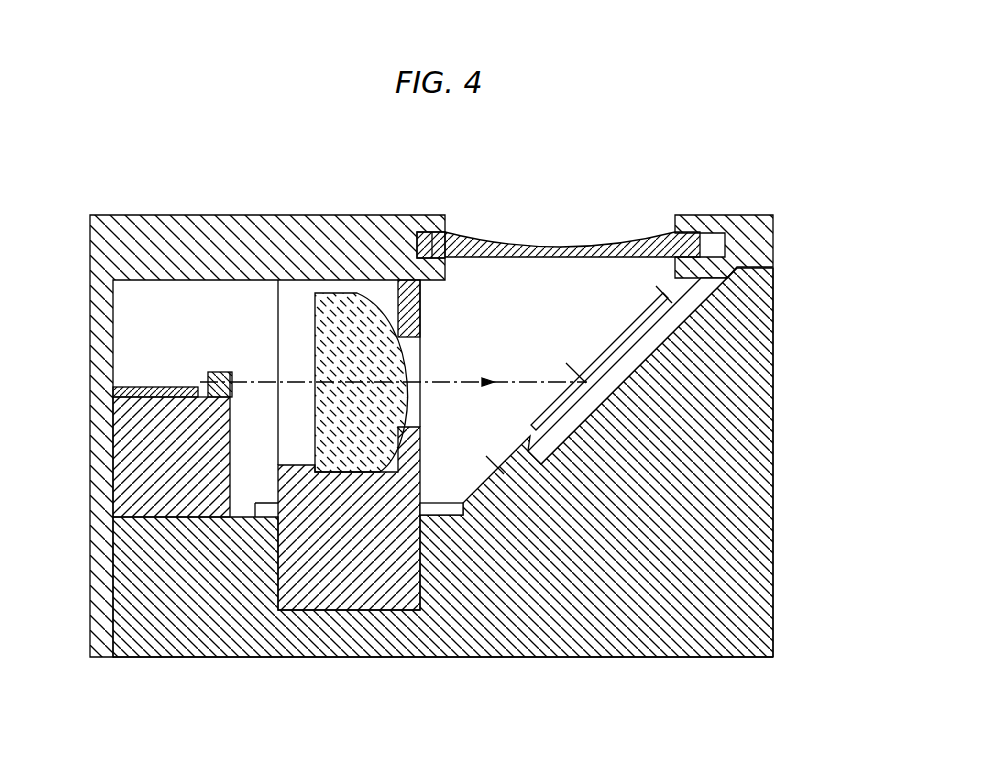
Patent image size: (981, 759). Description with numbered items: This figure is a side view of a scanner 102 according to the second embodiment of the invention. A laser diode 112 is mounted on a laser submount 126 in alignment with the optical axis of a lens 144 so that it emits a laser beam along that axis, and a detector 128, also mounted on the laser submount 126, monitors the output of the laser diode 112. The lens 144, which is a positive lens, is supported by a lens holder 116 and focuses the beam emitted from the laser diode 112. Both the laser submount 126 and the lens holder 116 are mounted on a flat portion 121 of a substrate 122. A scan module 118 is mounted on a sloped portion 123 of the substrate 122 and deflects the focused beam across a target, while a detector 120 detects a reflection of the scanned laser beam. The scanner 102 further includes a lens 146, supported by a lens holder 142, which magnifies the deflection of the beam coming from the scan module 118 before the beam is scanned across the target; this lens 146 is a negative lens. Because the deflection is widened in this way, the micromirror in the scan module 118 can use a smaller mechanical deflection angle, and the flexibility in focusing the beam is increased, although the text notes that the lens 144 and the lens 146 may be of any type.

The scanner 102 is at (317, 152).
The laser diode 112 is at (212, 372).
The lens holder 116 is at (422, 318).
The scan module 118 is at (609, 343).
The detector 120 is at (440, 503).
The flat portion 121 is at (122, 564).
The substrate 122 is at (540, 657).
The sloped portion 123 is at (758, 353).
The laser submount 126 is at (117, 447).
The detector 128 is at (150, 387).
The lens holder 142 is at (193, 228).
The lens 144 is at (388, 366).
The lens 146 is at (596, 243).